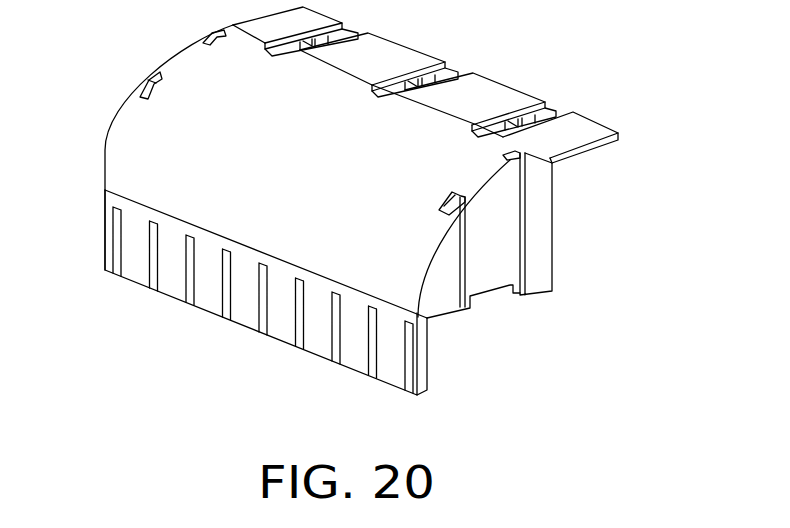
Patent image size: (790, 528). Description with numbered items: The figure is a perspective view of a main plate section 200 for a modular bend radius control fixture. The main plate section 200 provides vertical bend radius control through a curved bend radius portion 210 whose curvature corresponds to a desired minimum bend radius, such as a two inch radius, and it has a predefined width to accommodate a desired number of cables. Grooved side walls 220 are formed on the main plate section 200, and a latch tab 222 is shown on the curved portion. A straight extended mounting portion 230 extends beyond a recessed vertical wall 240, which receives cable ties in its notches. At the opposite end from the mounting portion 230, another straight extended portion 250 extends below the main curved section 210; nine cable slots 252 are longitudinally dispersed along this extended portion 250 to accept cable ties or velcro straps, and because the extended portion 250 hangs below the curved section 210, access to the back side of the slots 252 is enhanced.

The main plate section 200 is at (562, 207).
The curved bend radius portion 210 is at (127, 155).
The grooved side walls 220 is at (445, 310).
The latch tab 222 is at (145, 78).
The straight extended mounting portion 230 is at (495, 97).
The recessed vertical wall 240 is at (547, 238).
The straight extended portion 250 is at (133, 263).
The cable slots 252 is at (297, 346).